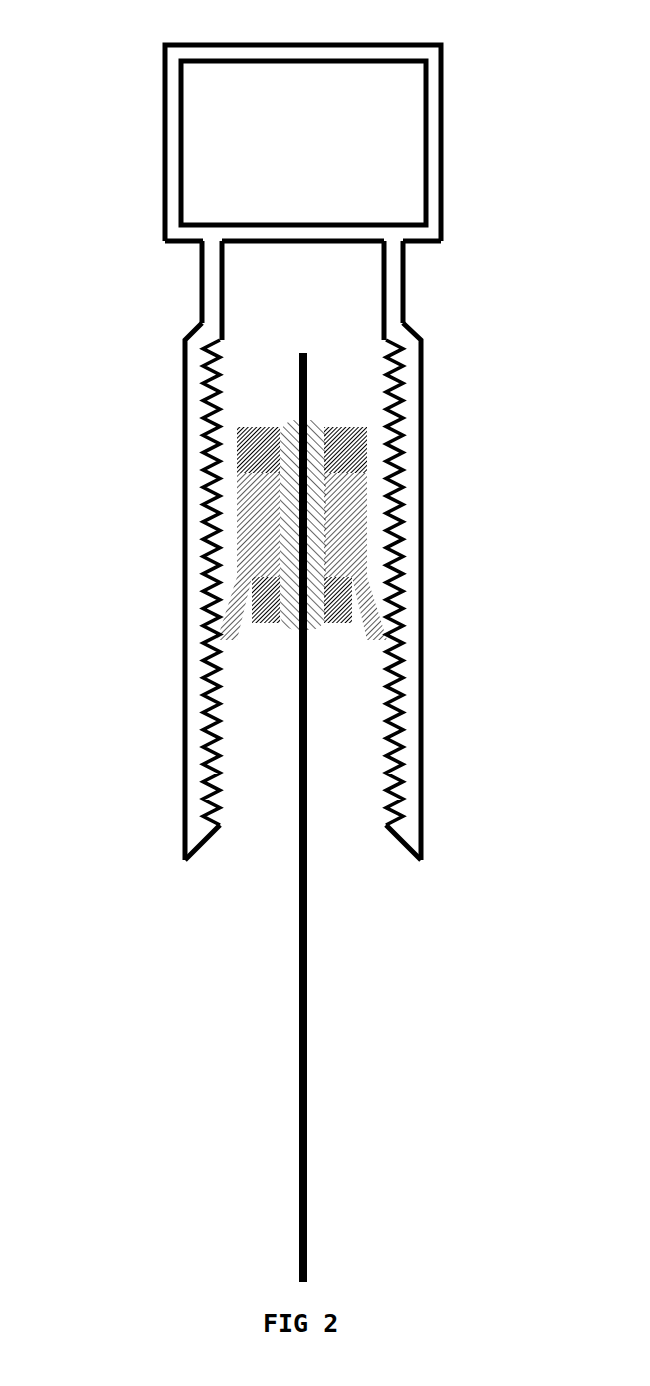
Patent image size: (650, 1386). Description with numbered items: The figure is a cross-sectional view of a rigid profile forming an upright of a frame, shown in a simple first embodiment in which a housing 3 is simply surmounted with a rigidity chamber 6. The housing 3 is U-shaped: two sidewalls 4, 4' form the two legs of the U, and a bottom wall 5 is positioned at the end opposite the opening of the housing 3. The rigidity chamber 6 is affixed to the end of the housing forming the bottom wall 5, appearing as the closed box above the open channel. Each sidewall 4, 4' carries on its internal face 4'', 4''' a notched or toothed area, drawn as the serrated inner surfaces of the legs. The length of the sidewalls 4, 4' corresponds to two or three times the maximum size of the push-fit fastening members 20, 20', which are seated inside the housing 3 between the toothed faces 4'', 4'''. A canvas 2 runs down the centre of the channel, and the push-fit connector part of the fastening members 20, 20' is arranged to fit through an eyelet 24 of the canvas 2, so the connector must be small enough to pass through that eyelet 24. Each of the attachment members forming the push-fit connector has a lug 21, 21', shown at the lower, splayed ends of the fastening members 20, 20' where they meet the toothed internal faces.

The canvas 2 is at (310, 1133).
The housing 3 is at (270, 850).
The sidewall 4 is at (461, 591).
The sidewall 4' is at (139, 591).
The internal face 4'' is at (365, 581).
The internal face 4''' is at (243, 581).
The bottom wall 5 is at (244, 259).
The rigidity chamber 6 is at (369, 137).
The push-fit fastening member 20 is at (423, 498).
The push-fit fastening member 20' is at (178, 497).
The lug 21 is at (357, 641).
The lug 21' is at (253, 641).
The eyelet 24 is at (313, 425).